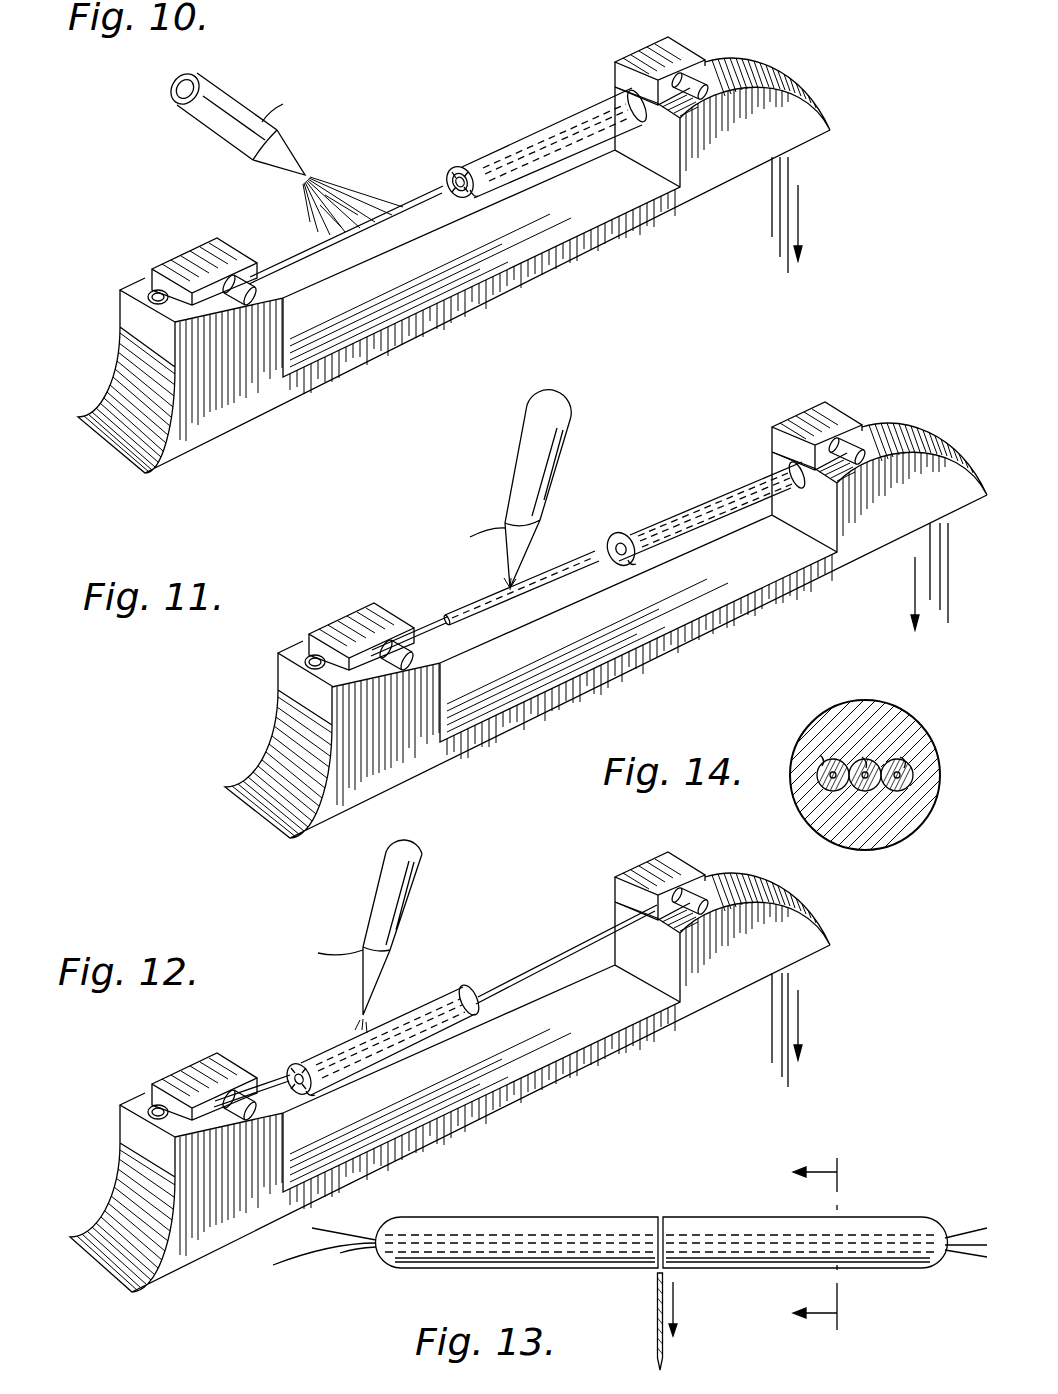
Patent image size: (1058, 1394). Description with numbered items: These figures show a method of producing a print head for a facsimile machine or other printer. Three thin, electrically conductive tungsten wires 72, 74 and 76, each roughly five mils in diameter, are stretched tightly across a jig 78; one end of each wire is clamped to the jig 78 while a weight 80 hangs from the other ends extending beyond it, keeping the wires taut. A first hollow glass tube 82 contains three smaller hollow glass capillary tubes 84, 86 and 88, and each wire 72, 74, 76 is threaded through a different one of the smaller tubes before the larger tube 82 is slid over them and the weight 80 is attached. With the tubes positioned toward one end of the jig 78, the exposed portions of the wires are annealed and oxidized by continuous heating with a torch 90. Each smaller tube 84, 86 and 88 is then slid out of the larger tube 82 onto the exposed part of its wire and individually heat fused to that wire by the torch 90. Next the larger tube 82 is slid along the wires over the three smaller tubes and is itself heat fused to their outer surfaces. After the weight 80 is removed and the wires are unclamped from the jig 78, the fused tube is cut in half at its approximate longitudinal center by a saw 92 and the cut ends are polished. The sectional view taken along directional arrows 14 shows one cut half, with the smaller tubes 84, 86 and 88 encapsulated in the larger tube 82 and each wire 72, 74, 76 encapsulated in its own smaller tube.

In FIG. 13, the directional arrows 14- 14 is at (806, 1253).
In FIG. 10, the electrically conductive wire 72 is at (424, 193).
In FIG. 11, the electrically conductive wire 72 is at (420, 632).
In FIG. 12, the electrically conductive wire 72 is at (503, 985).
In FIG. 13, the electrically conductive wire 72 is at (337, 1232).
In FIG. 14, the electrically conductive wire 72 is at (822, 792).
In FIG. 10, the electrically conductive wire 74 is at (424, 205).
In FIG. 11, the electrically conductive wire 74 is at (452, 635).
In FIG. 12, the electrically conductive wire 74 is at (547, 965).
In FIG. 13, the electrically conductive wire 74 is at (978, 1258).
In FIG. 14, the electrically conductive wire 74 is at (862, 797).
In FIG. 10, the electrically conductive wire 76 is at (318, 253).
In FIG. 11, the electrically conductive wire 76 is at (580, 580).
In FIG. 12, the electrically conductive wire 76 is at (590, 944).
In FIG. 13, the electrically conductive wire 76 is at (340, 1257).
In FIG. 14, the electrically conductive wire 76 is at (900, 790).
In FIG. 10, the jig 78 is at (473, 304).
In FIG. 11, the jig 78 is at (593, 687).
In FIG. 12, the jig 78 is at (562, 1082).
In FIG. 10, the weight 80 is at (852, 243).
In FIG. 11, the weight 80 is at (860, 605).
In FIG. 12, the weight 80 is at (862, 1050).
In FIG. 10, the first hollow glass cylinder or tube 82 is at (535, 128).
In FIG. 11, the first hollow glass cylinder or tube 82 is at (707, 498).
In FIG. 12, the first hollow glass cylinder or tube 82 is at (433, 995).
In FIG. 13, the first hollow glass cylinder or tube 82 is at (513, 1215).
In FIG. 14, the first hollow glass cylinder or tube 82 is at (887, 840).
In FIG. 10, the smaller hollow glass cylinder or capillary tube 84 is at (452, 168).
In FIG. 11, the smaller hollow glass cylinder or capillary tube 84 is at (565, 560).
In FIG. 12, the smaller hollow glass cylinder or capillary tube 84 is at (290, 1070).
In FIG. 14, the smaller hollow glass cylinder or capillary tube 84 is at (822, 760).
In FIG. 10, the smaller hollow glass cylinder or capillary tube 86 is at (465, 172).
In FIG. 11, the smaller hollow glass cylinder or capillary tube 86 is at (630, 548).
In FIG. 12, the smaller hollow glass cylinder or capillary tube 86 is at (302, 1070).
In FIG. 14, the smaller hollow glass cylinder or capillary tube 86 is at (867, 758).
In FIG. 10, the smaller hollow glass cylinder or capillary tube 88 is at (476, 194).
In FIG. 11, the smaller hollow glass cylinder or capillary tube 88 is at (632, 563).
In FIG. 12, the smaller hollow glass cylinder or capillary tube 88 is at (307, 1093).
In FIG. 14, the smaller hollow glass cylinder or capillary tube 88 is at (905, 757).
In FIG. 10, the torch 90 is at (198, 110).
In FIG. 11, the torch 90 is at (566, 446).
In FIG. 12, the torch 90 is at (414, 893).
In FIG. 13, the saw 92 is at (655, 1312).